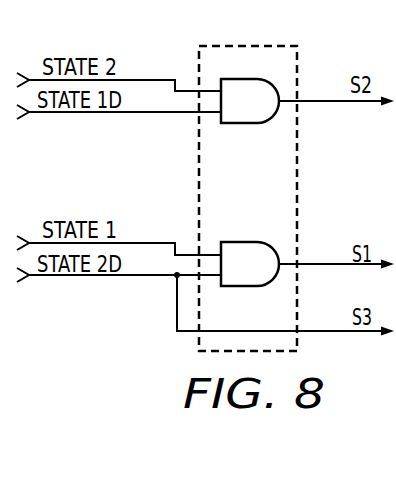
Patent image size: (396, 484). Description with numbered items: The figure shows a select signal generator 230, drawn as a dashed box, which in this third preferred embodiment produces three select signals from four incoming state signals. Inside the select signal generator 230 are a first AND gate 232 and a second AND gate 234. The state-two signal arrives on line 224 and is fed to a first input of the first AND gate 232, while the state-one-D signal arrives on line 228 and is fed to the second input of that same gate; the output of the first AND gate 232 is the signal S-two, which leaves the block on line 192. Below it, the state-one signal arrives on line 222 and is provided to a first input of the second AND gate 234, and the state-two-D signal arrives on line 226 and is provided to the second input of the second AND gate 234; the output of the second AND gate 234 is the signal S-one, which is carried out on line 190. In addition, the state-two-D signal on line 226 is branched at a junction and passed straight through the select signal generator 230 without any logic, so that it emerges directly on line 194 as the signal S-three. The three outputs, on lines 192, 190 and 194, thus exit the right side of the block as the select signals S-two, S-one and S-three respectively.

The line 190 is at (318, 262).
The line 192 is at (318, 99).
The line 194 is at (318, 329).
The line 222 is at (155, 242).
The line 224 is at (155, 79).
The line 226 is at (84, 277).
The line 228 is at (84, 113).
The select signal generator 230 is at (299, 162).
The first AND gate 232 is at (240, 124).
The second AND gate 234 is at (242, 241).